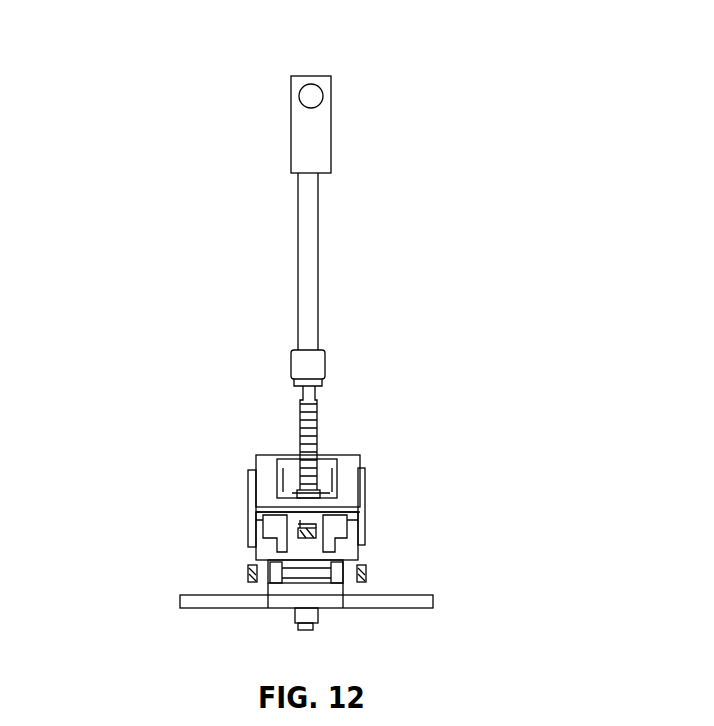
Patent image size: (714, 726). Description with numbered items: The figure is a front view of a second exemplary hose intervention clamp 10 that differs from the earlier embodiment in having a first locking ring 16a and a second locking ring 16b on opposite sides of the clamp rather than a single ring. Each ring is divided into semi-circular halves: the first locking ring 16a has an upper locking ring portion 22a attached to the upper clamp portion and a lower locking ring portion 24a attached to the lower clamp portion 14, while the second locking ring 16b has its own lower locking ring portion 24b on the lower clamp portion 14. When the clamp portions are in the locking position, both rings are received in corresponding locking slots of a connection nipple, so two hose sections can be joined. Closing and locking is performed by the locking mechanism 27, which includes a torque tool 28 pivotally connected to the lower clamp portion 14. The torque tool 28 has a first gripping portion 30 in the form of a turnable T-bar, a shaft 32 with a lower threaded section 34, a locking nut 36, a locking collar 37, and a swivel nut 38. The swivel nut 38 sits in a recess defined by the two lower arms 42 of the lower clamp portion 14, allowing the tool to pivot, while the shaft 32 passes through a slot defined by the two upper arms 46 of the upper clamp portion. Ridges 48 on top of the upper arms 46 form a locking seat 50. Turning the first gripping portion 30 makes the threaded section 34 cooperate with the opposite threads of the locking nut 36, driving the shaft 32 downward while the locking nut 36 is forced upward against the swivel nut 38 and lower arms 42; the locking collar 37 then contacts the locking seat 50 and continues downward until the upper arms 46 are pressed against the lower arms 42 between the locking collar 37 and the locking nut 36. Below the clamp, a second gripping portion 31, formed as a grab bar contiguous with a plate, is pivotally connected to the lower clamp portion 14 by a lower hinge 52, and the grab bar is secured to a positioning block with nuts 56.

The hose intervention clamp 10 is at (226, 230).
The lower clamp portion 14 is at (352, 543).
The first locking ring 16a is at (232, 507).
The second locking ring 16b is at (386, 510).
The upper locking ring portion 22a is at (248, 492).
The lower locking ring portion 24a is at (248, 520).
The lower locking ring portion 24b is at (365, 538).
The locking mechanism 27 is at (396, 200).
The torque tool 28 is at (318, 137).
The first gripping portion 30 is at (328, 75).
The second gripping portion 31 is at (203, 604).
The shaft 32 is at (318, 229).
The lower threaded section 34 is at (313, 412).
The locking nut 36 is at (298, 533).
The locking collar 37 is at (320, 365).
The swivel nut 38 is at (317, 520).
The lower arms 42 is at (347, 485).
The upper arms 46 is at (332, 492).
The ridges 48 is at (285, 490).
The locking seat 50 is at (292, 490).
The lower hinge 52 is at (363, 577).
The nuts 56 is at (310, 630).